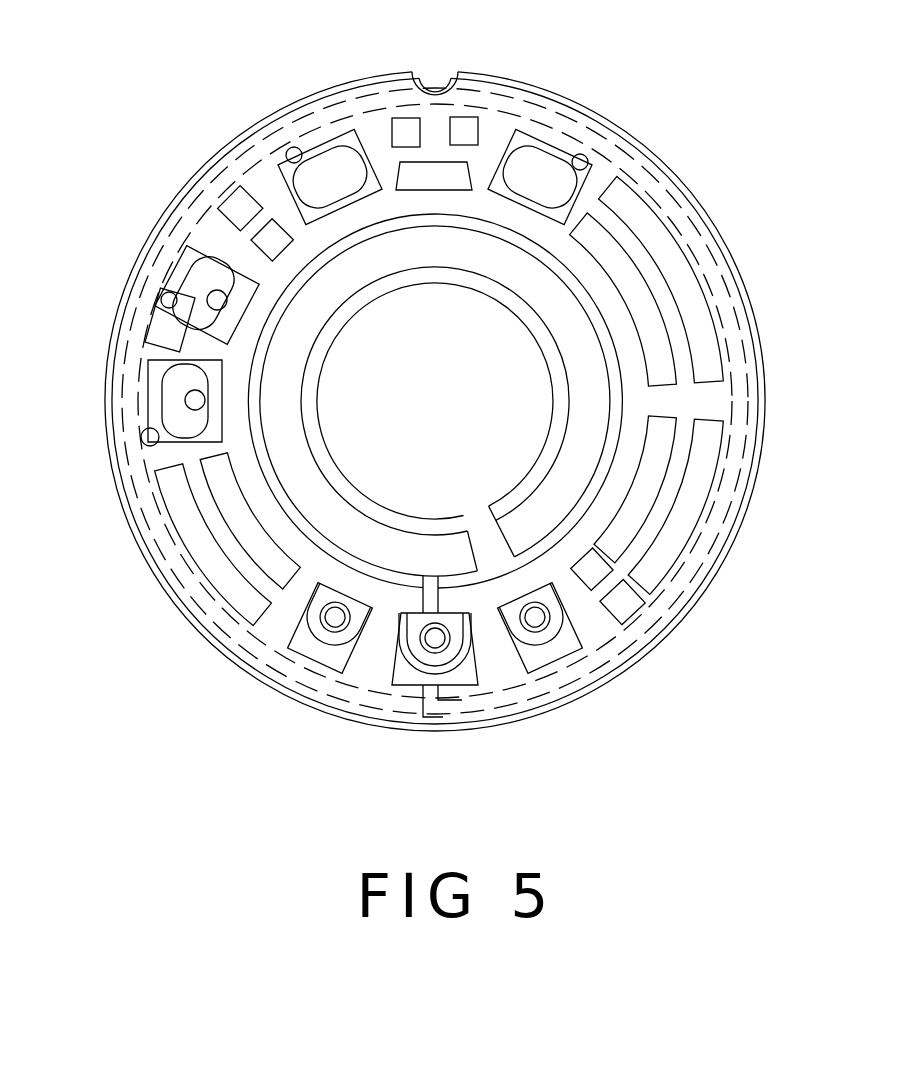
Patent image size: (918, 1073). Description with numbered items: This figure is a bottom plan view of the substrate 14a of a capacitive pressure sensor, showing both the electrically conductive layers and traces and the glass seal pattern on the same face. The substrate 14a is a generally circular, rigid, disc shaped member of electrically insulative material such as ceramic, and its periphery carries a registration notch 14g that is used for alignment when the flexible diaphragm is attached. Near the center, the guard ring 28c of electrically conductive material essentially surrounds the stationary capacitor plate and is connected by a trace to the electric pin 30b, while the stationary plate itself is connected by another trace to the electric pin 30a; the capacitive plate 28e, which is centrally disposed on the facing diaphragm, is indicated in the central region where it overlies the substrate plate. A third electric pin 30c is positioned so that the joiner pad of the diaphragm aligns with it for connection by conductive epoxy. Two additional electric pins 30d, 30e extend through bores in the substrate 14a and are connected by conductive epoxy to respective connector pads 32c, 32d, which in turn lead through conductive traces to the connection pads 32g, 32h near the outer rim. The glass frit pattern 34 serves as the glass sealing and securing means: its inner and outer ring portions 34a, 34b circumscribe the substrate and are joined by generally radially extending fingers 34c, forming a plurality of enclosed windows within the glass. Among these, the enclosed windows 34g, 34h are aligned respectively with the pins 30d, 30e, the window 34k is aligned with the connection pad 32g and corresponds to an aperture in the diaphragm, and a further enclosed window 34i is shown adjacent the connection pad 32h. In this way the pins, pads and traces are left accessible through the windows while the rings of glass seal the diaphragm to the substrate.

The substrate 14a is at (762, 362).
The registration notch 14g is at (443, 88).
The guard ring 28c is at (537, 337).
The capacitive plate 28e is at (468, 430).
The electric pin 30a is at (537, 620).
The electric pin 30b is at (435, 637).
The electric pin 30c is at (335, 620).
The electric pin 30d is at (180, 403).
The electric pin 30e is at (213, 300).
The connector pad 32c is at (165, 418).
The connector pad 32d is at (217, 272).
The connection pad 32g is at (548, 170).
The connection pad 32h is at (330, 175).
The glass frit pattern 34 is at (690, 212).
The inner ring portion 34a is at (722, 302).
The outer ring portion 34b is at (618, 313).
The radially extending fingers 34c is at (376, 138).
The enclosed window 34g is at (142, 443).
The enclosed window 34h is at (166, 300).
The notch 34i is at (290, 152).
The enclosed window 34k is at (588, 180).